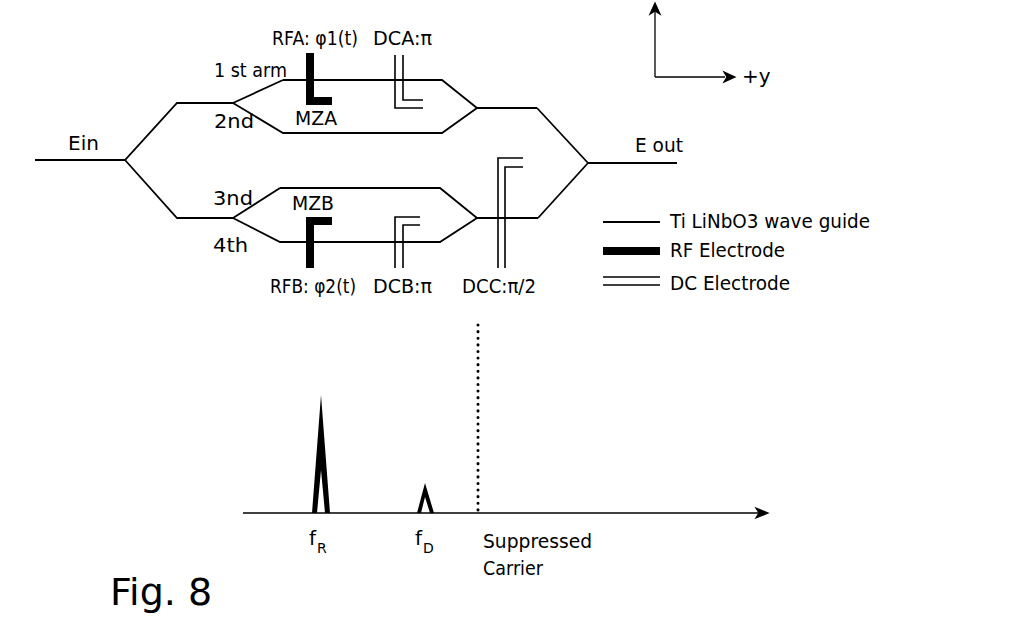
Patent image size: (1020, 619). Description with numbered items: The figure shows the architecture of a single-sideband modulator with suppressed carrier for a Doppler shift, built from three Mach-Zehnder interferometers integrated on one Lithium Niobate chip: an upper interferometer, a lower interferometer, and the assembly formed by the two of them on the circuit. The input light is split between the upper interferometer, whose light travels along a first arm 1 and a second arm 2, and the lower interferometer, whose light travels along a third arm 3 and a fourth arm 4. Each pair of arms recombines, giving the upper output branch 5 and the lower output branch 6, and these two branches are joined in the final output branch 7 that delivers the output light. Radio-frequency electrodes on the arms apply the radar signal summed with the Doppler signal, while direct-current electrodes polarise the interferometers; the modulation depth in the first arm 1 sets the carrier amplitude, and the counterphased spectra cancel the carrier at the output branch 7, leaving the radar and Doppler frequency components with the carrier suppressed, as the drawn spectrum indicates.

The first arm 1 is at (380, 80).
The second arm 2 is at (375, 145).
The third arm 3 is at (378, 194).
The fourth arm 4 is at (374, 254).
The MZA output branch 5 is at (522, 98).
The MZB output branch 6 is at (521, 223).
The output branch 7 is at (632, 150).